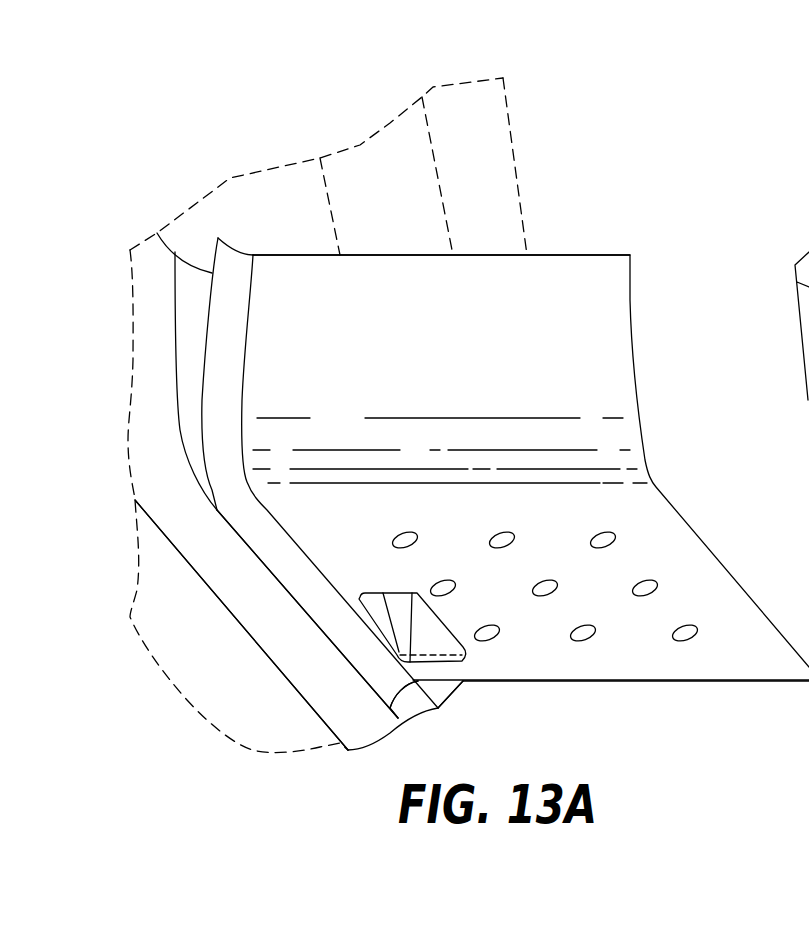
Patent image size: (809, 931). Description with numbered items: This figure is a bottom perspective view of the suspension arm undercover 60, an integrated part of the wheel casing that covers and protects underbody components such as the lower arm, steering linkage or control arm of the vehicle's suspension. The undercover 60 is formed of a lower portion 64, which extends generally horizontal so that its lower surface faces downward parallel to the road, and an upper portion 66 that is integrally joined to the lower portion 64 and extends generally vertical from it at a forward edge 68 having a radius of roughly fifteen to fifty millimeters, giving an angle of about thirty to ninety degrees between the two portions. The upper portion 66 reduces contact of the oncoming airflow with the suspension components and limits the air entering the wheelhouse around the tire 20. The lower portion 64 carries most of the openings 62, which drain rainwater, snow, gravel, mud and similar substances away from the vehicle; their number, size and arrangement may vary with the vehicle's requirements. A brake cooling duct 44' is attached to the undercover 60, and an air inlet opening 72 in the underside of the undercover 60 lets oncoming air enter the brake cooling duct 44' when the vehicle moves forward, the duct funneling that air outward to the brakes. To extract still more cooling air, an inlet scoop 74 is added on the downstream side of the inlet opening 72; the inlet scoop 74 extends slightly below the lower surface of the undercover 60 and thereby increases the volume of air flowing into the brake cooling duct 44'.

The tire 20 is at (517, 145).
The suspension arm undercover 60 is at (610, 349).
The upper portion 66 is at (588, 280).
The forward edge 68 is at (620, 457).
The openings 62 is at (583, 633).
The lower portion 64 is at (738, 627).
The air inlet opening 72 is at (383, 598).
The brake cooling duct 44' is at (439, 627).
The inlet scoop 74 is at (442, 660).